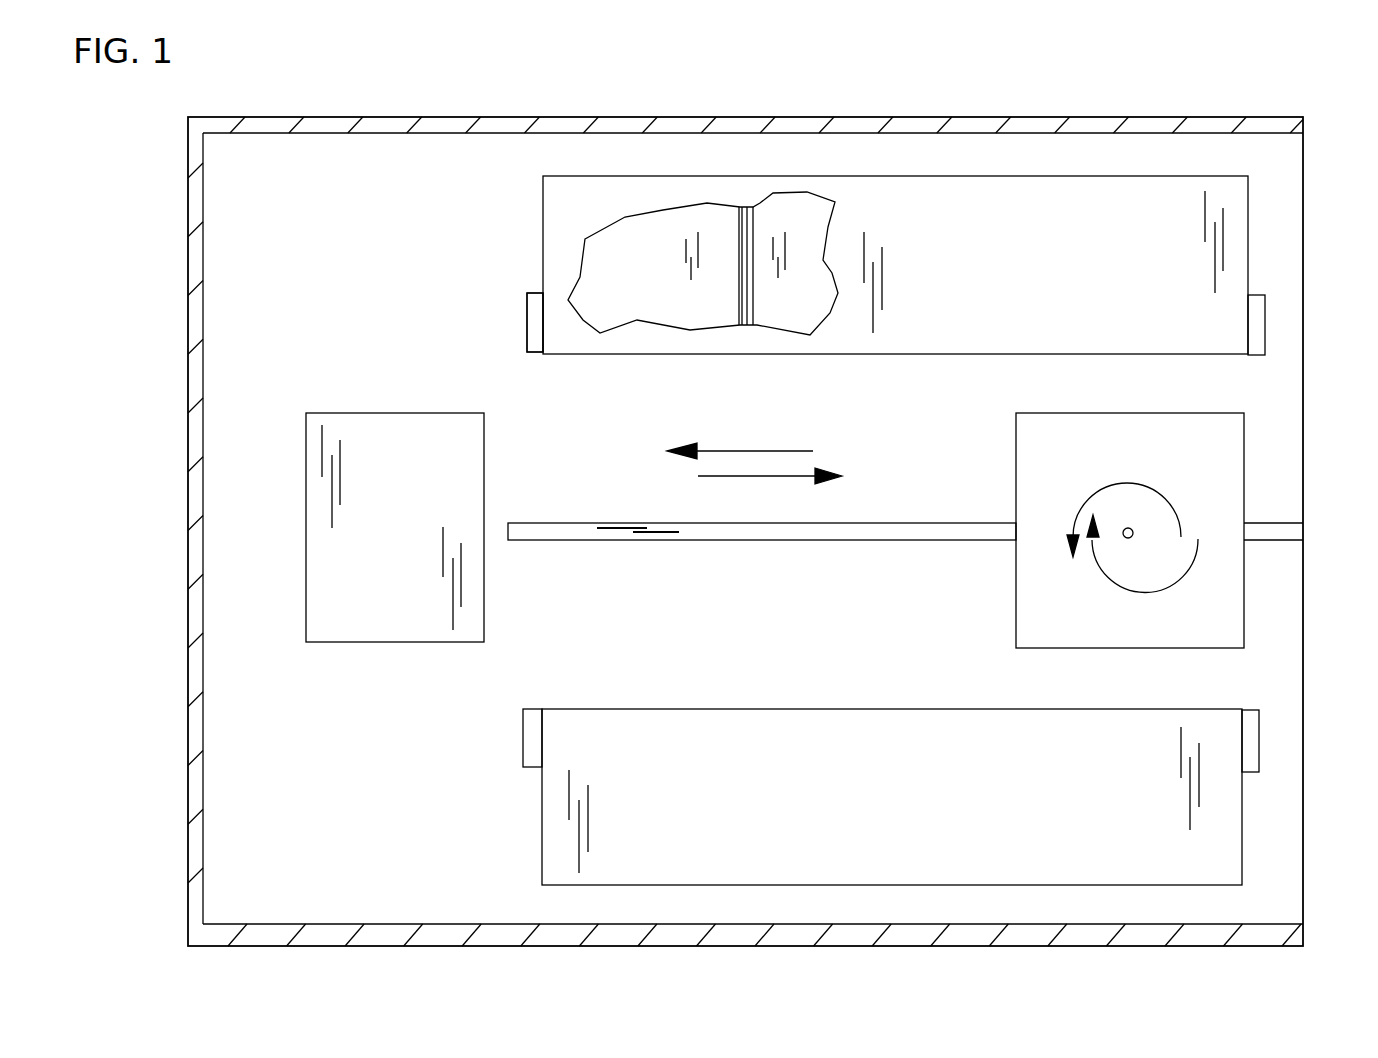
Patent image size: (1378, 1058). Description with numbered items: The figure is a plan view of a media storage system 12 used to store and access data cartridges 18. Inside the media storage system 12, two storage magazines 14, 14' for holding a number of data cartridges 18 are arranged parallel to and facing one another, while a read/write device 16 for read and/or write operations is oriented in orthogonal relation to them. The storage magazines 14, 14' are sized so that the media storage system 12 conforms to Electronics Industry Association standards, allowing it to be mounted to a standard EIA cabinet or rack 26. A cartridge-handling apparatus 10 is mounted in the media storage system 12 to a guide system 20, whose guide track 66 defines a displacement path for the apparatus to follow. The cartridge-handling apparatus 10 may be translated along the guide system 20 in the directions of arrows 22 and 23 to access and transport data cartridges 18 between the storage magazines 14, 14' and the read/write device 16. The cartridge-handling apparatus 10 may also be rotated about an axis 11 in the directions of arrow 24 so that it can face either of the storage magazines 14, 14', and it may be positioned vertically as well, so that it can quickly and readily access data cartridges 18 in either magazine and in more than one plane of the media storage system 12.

The cartridge-handling apparatus 10 is at (1255, 451).
The axis 11 is at (1128, 540).
The media storage system 12 is at (896, 112).
The storage magazine 14 is at (891, 797).
The storage magazine 14' is at (896, 265).
The read/write device 16 is at (373, 605).
The data cartridge 18 is at (618, 286).
The guide system 20 is at (858, 514).
The arrow 22 is at (728, 451).
The arrow 23 is at (727, 476).
The arrow 24 is at (1168, 492).
The rack 26 is at (525, 325).
The guide track 66 is at (663, 540).